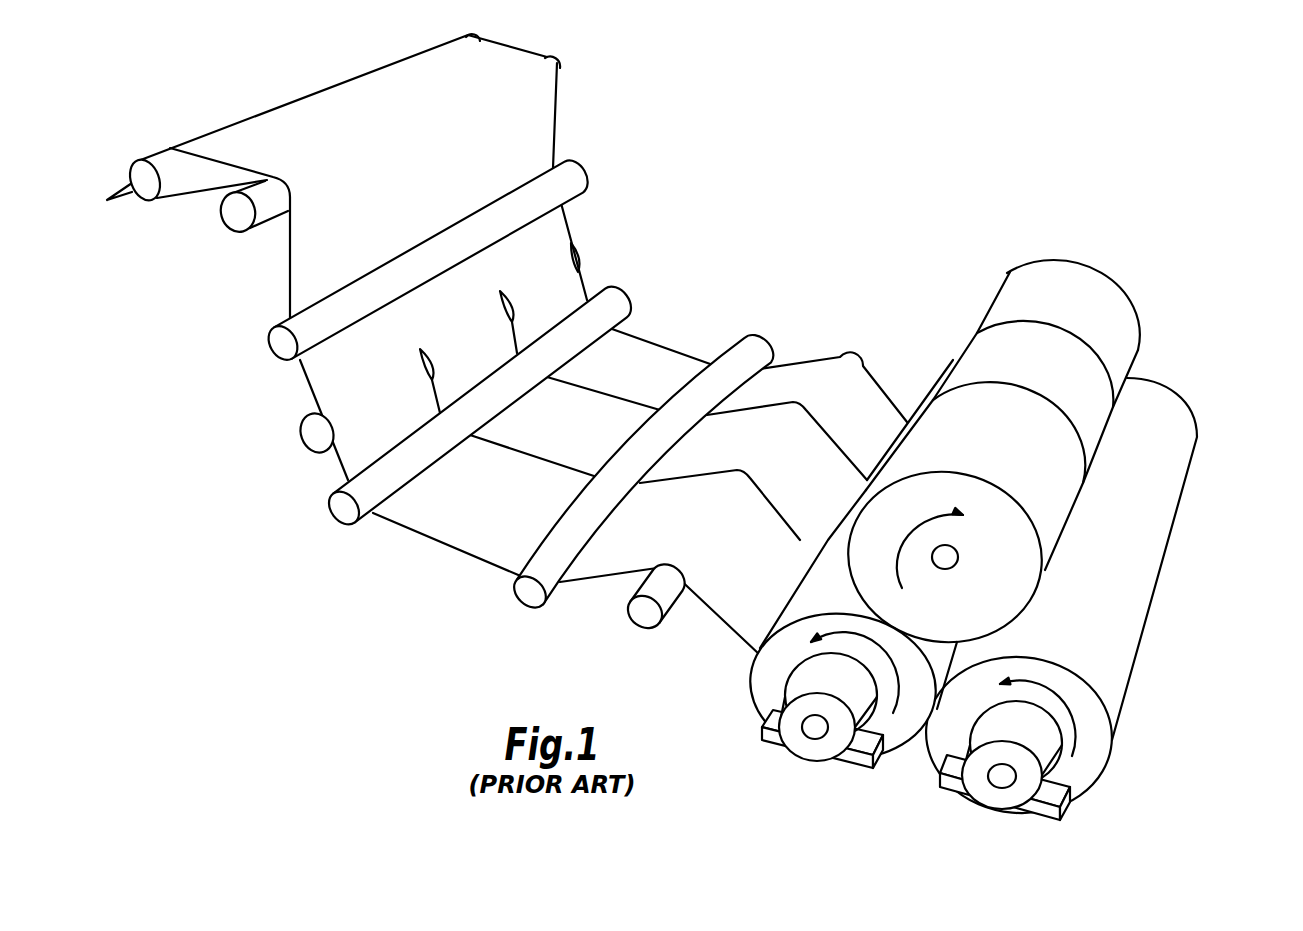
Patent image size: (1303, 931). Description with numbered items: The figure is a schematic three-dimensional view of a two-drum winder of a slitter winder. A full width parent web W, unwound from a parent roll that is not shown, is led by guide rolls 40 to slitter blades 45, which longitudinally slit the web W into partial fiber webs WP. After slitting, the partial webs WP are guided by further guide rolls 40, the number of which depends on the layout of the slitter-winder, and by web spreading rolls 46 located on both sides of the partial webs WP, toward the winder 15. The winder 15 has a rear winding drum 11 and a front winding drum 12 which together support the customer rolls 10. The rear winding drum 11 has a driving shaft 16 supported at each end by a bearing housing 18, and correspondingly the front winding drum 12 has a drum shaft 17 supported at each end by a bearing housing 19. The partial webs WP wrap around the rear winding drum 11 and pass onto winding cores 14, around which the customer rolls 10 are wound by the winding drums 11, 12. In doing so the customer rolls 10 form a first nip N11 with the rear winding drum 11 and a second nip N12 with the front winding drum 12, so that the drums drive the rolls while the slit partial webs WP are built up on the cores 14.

The parent web W is at (490, 156).
The partial fiber webs WP is at (643, 352).
The guide rolls 40 is at (143, 185).
The slitter blades 45 is at (334, 432).
The web spreading rolls 46 is at (523, 598).
The winder 15 is at (992, 262).
The customer rolls 10 is at (1127, 353).
The winding cores 14 is at (955, 555).
The rear winding drum 11 is at (757, 683).
The front winding drum 12 is at (1123, 675).
The first nip N11 is at (868, 608).
The second nip N12 is at (1062, 608).
The driving shaft 16 is at (812, 729).
The drum shaft 17 is at (1000, 778).
The bearing housing 18 is at (862, 758).
The bearing housing 19 is at (1045, 810).